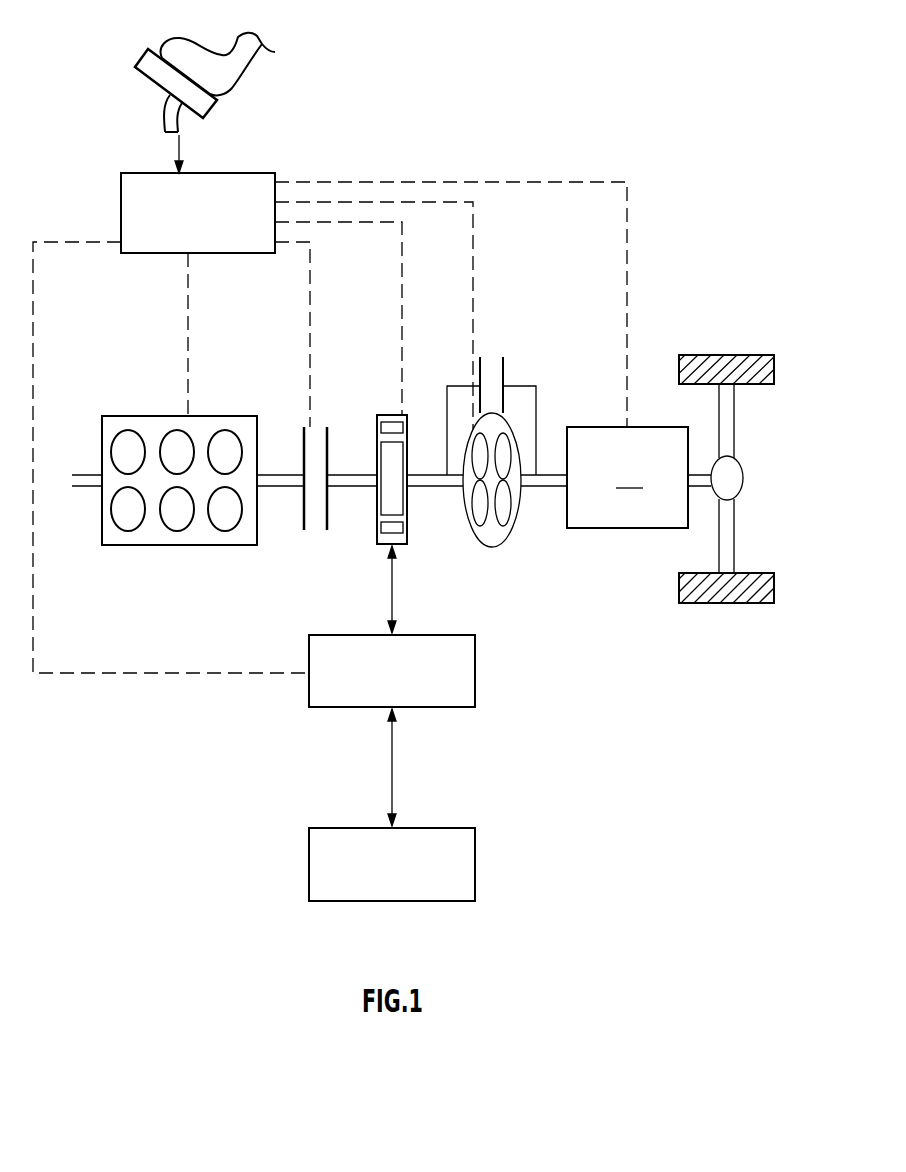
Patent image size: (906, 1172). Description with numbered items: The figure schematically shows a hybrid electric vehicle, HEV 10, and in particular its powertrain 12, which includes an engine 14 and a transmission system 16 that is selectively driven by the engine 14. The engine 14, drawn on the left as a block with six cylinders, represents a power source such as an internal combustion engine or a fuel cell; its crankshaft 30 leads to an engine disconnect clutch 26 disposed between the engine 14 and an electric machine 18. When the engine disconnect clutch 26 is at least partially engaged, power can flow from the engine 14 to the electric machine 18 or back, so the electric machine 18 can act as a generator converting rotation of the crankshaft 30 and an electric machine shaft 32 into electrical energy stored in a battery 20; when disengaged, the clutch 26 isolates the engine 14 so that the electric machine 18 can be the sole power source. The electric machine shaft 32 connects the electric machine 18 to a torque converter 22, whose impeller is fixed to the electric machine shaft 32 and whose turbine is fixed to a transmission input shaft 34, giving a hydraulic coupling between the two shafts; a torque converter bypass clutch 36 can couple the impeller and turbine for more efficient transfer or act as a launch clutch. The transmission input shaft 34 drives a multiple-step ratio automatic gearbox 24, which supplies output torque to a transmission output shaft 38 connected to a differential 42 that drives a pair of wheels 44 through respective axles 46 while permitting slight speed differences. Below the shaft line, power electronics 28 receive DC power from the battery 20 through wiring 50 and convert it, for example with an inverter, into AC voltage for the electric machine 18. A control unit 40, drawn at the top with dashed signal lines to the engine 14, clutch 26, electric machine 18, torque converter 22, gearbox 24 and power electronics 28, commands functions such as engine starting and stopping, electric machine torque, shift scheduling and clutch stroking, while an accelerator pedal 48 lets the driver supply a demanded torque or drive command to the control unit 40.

The HEV 10 is at (465, 97).
The powertrain 12 is at (229, 594).
The engine 14 is at (158, 545).
The transmission system 16 is at (520, 290).
The electric machine 18 is at (392, 415).
The battery 20 is at (475, 869).
The torque converter 22 is at (509, 535).
The transmission gearbox 24 is at (627, 477).
The engine disconnect clutch 26 is at (322, 415).
The power electronics 28 is at (475, 677).
The crankshaft 30 is at (262, 474).
The electric machine shaft 32 is at (341, 474).
The transmission input shaft 34 is at (548, 474).
The torque converter bypass clutch 36 is at (493, 350).
The transmission output shaft 38 is at (702, 487).
The control unit 40 is at (132, 173).
The differential 42 is at (745, 478).
The wheels 44 is at (736, 355).
The axles 46 is at (735, 423).
The accelerator pedal 48 is at (142, 56).
The wiring 50 is at (392, 763).